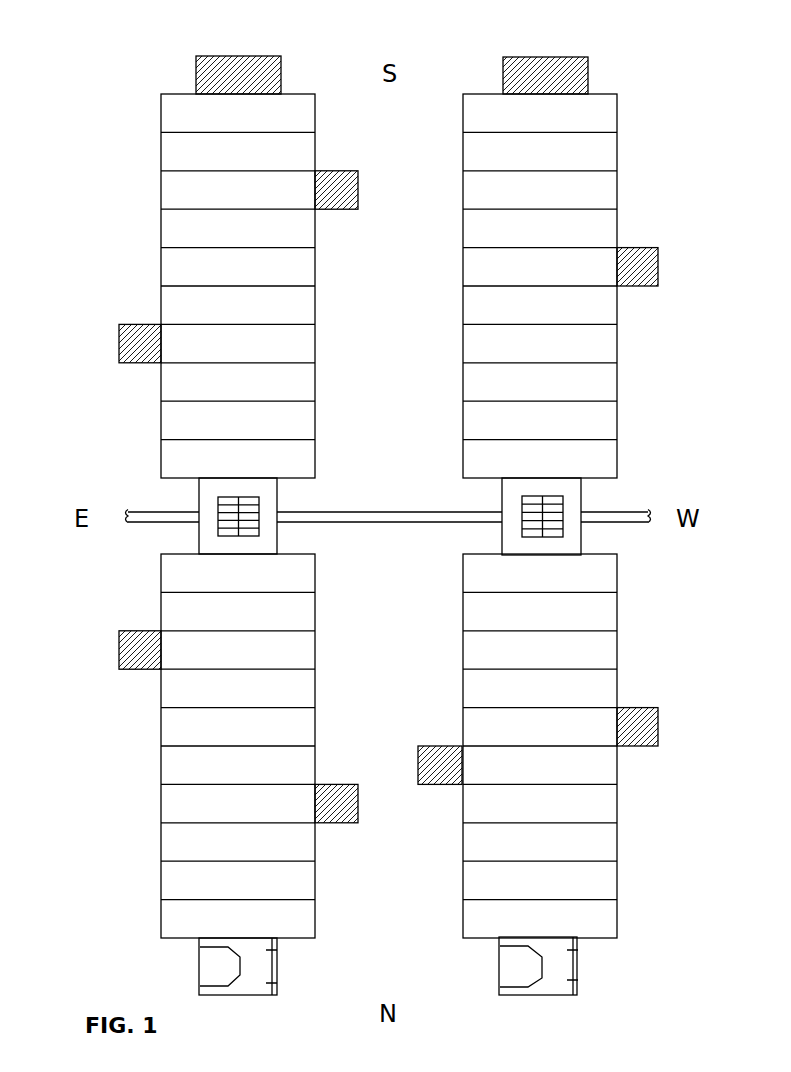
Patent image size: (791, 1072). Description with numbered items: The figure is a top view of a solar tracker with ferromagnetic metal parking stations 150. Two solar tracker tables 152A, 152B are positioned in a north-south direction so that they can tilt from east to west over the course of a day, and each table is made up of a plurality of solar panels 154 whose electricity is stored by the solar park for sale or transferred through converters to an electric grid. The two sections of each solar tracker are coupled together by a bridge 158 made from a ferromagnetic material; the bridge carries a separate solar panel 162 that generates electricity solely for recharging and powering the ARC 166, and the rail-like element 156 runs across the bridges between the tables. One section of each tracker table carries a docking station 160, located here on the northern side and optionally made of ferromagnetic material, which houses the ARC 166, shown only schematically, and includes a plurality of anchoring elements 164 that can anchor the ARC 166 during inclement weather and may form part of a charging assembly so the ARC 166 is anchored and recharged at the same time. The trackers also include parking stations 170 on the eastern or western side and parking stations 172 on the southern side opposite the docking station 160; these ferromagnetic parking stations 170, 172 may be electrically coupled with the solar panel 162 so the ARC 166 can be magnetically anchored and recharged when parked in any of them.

The solar tracker with ferromagnetic metal parking stations 150 is at (144, 35).
The solar tracker table 152A is at (161, 225).
The solar tracker table 152B is at (463, 190).
The plurality of solar panels 154 is at (300, 384).
The rail 156 is at (386, 521).
The bridge 158 is at (207, 498).
The docking station 160 is at (254, 986).
The solar panel 162 is at (250, 532).
The plurality of anchoring elements 164 is at (277, 984).
The ARC 166 is at (207, 966).
The parking stations 170 is at (337, 210).
The parking stations 172 is at (196, 77).